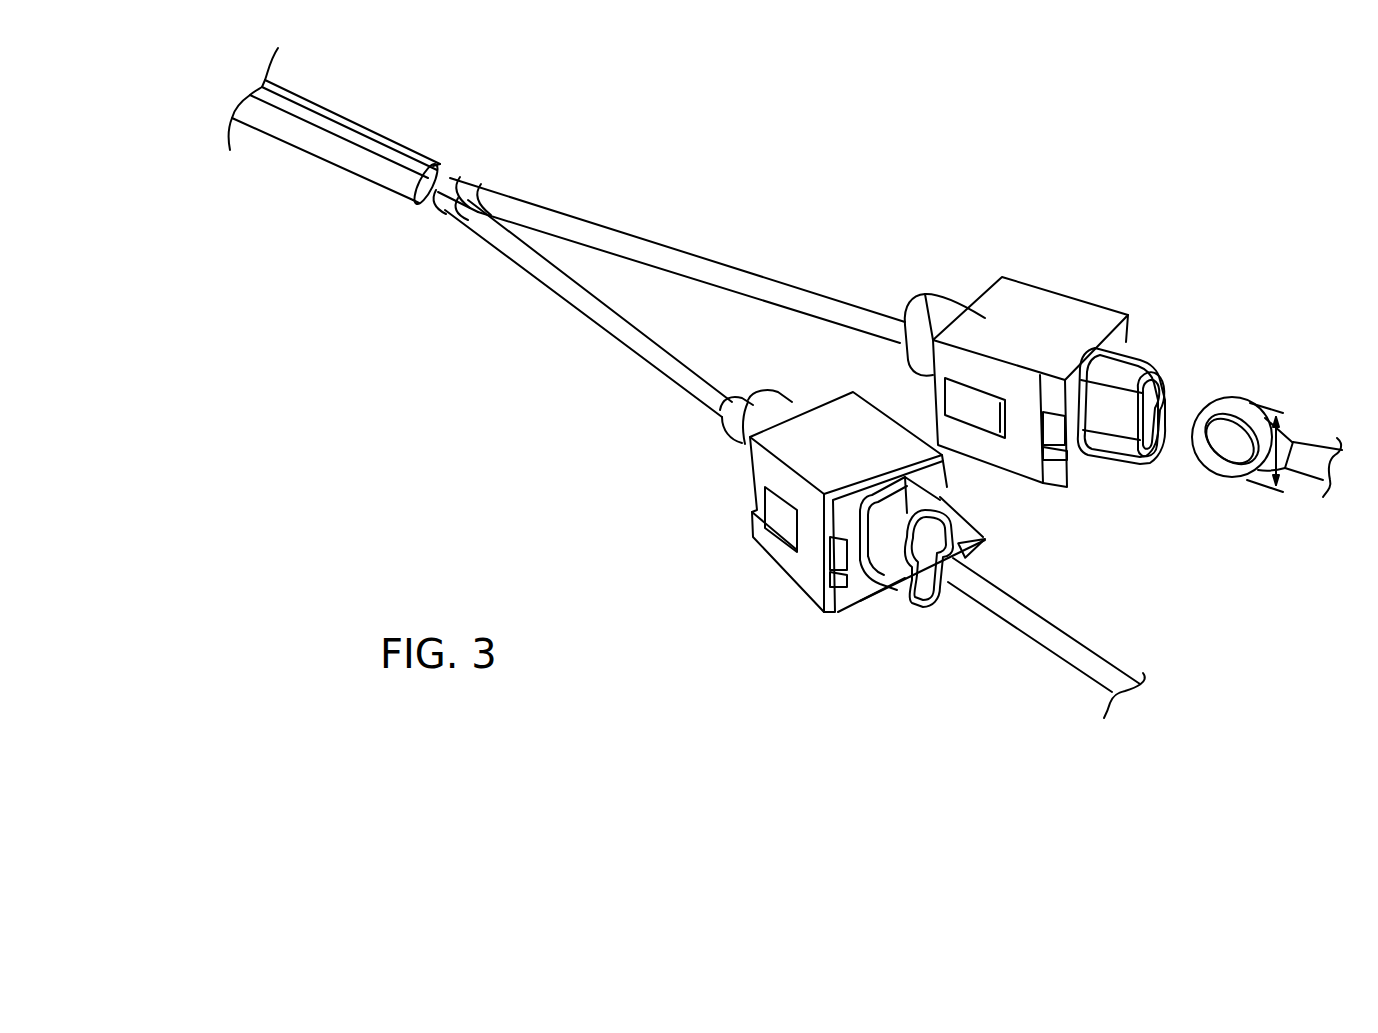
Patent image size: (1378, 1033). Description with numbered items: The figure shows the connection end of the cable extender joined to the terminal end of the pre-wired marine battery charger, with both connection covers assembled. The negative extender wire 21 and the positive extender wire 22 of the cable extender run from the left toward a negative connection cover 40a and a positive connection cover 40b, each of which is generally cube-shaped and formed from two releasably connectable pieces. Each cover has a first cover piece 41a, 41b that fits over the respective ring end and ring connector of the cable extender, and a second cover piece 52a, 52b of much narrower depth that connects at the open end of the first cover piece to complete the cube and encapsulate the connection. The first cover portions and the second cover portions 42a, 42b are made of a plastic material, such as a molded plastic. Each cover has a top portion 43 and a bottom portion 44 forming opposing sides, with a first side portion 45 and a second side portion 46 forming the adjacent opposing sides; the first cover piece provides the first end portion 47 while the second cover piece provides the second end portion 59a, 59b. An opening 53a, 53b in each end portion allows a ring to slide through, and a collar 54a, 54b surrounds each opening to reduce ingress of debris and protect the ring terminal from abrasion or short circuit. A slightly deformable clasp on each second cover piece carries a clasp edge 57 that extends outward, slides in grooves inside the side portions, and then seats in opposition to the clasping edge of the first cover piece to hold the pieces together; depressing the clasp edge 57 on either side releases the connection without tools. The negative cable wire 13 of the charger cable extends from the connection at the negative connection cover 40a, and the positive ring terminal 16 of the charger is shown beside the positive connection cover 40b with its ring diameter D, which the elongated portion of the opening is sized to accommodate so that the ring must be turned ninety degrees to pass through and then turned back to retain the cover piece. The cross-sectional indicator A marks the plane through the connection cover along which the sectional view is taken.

The negative cable wire 13 is at (1070, 653).
The positive ring terminal 16 is at (1213, 465).
The negative extender wire 21 is at (600, 312).
The positive extender wire 22 is at (706, 262).
The negative connection cover 40a is at (803, 620).
The positive connection cover 40b is at (1102, 241).
The first cover piece 41a is at (750, 442).
The first cover piece 41b is at (1002, 277).
The second cover portion 42a is at (755, 396).
The second cover portion 42b is at (905, 296).
The top portion 43 is at (850, 392).
The bottom portion 44 is at (790, 582).
The first side portion 45 is at (753, 467).
The second side portion 46 is at (873, 398).
The first end portion 47 is at (817, 400).
The second cover piece 52a is at (852, 593).
The second cover piece 52b is at (1123, 337).
The opening 53a is at (943, 577).
The opening 53b is at (1148, 407).
The collar 54a is at (966, 526).
The collar 54b is at (1133, 362).
The clasp edge 57 is at (1003, 468).
The second end portion 59a is at (935, 474).
The second end portion 59b is at (1133, 342).
The cross-sectional indicator A is at (975, 548).
The ring diameter D is at (1288, 440).